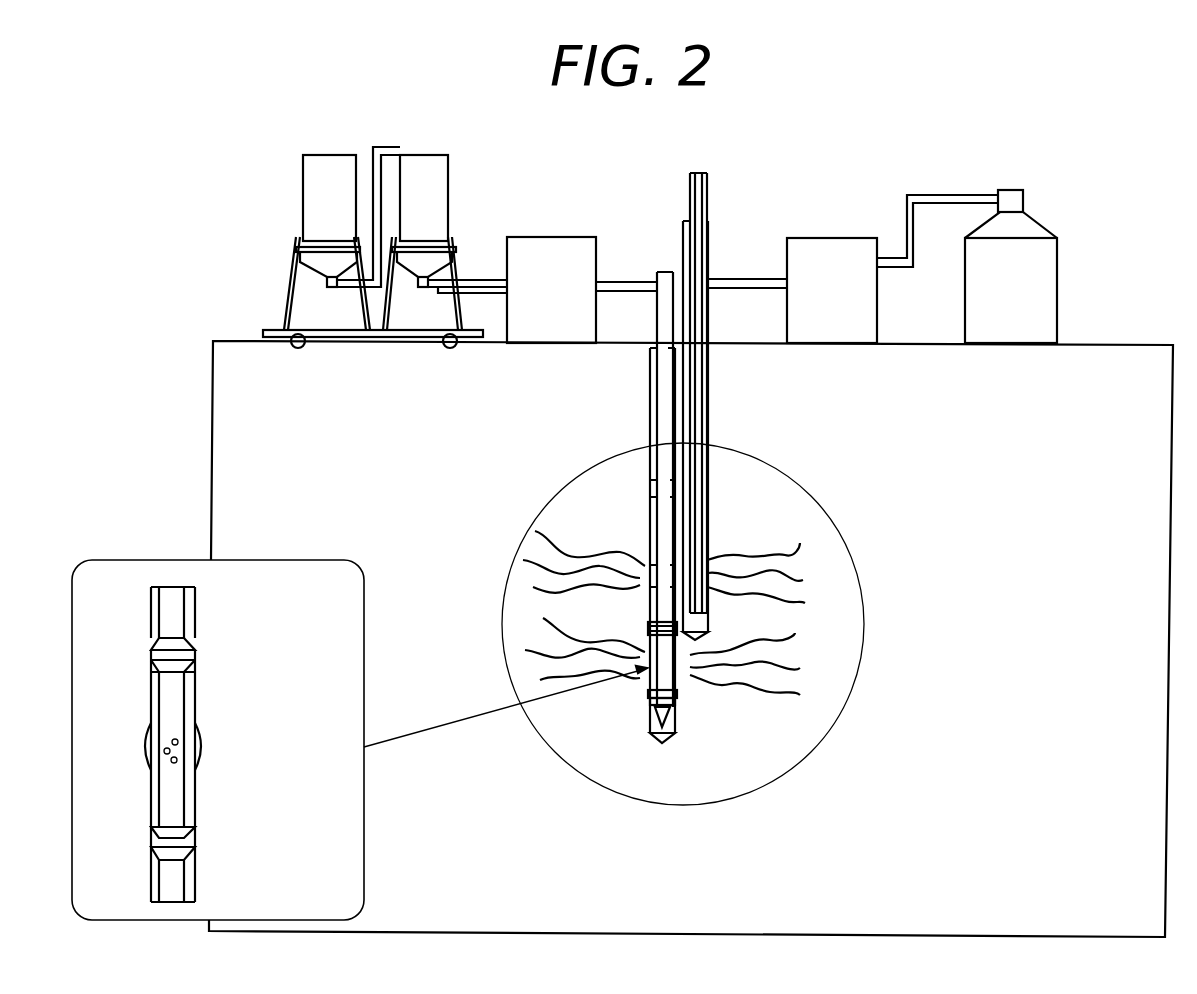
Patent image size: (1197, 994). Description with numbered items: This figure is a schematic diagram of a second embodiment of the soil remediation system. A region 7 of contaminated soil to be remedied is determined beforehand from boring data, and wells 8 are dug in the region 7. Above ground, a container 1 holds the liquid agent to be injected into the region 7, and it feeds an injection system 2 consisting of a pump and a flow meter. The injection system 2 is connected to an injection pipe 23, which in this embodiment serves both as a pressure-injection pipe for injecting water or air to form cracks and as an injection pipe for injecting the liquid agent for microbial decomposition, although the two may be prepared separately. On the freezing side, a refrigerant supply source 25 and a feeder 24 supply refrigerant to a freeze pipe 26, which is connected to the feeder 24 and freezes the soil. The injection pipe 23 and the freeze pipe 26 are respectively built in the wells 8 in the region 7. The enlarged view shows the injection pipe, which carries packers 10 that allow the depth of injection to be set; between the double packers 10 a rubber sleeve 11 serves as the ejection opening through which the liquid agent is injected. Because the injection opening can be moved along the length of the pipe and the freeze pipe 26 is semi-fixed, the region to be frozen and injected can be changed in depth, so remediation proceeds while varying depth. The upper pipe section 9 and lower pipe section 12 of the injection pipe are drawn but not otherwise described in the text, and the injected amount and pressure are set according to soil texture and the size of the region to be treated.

The container 1 is at (442, 183).
The injection system 2 is at (568, 249).
The region of contaminated soil 7 is at (828, 533).
The wells 8 is at (708, 622).
The upper pipe section 9 is at (197, 618).
The packers 10 is at (183, 665).
The rubber sleeve 11 is at (200, 738).
The lower pipe section 12 is at (197, 805).
The injection pipe 23 is at (656, 331).
The feeder 24 is at (846, 257).
The refrigerant supply source 25 is at (1050, 272).
The freeze pipe 26 is at (699, 174).